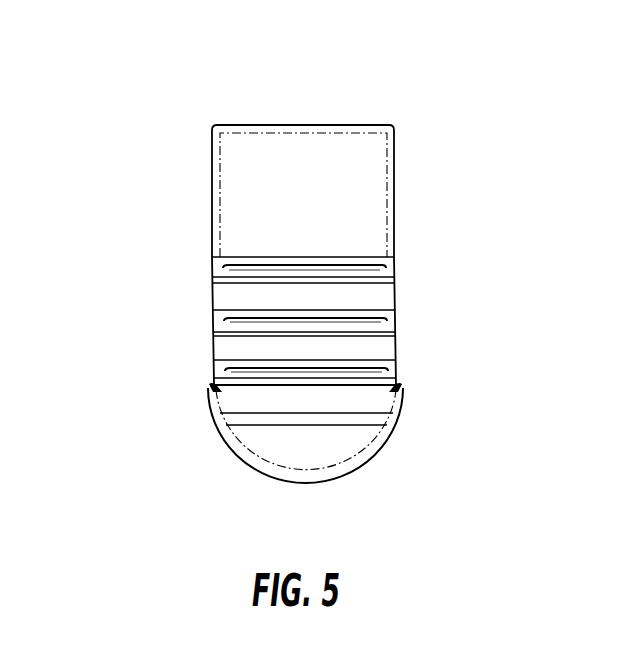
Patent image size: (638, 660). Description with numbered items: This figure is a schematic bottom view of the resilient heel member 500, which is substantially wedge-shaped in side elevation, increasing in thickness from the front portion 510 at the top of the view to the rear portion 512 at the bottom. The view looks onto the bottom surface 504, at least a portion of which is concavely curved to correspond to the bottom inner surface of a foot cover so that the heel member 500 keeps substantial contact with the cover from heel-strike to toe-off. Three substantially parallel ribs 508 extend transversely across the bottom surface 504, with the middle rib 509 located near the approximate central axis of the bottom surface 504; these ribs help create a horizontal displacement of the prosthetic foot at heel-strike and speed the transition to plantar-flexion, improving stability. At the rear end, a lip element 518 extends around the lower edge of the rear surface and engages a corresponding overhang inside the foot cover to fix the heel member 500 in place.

The heel member 500 is at (287, 285).
The bottom surface 504 is at (327, 215).
The rib 508 is at (385, 267).
The middle rib 509 is at (386, 320).
The front portion 510 is at (338, 122).
The rear portion 512 is at (236, 456).
The lip element 518 is at (383, 438).